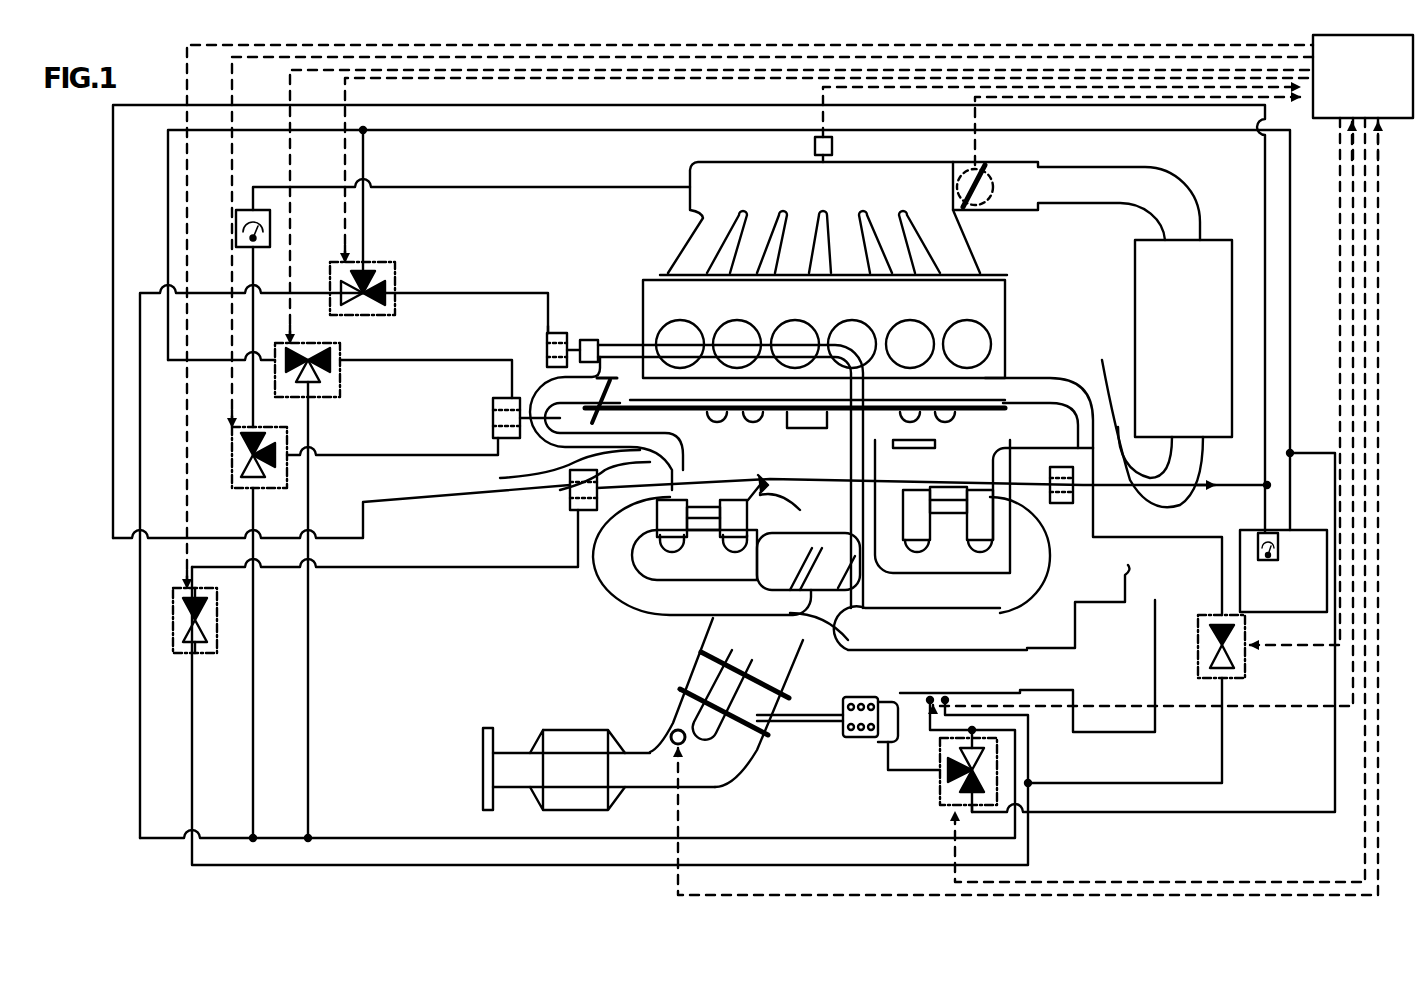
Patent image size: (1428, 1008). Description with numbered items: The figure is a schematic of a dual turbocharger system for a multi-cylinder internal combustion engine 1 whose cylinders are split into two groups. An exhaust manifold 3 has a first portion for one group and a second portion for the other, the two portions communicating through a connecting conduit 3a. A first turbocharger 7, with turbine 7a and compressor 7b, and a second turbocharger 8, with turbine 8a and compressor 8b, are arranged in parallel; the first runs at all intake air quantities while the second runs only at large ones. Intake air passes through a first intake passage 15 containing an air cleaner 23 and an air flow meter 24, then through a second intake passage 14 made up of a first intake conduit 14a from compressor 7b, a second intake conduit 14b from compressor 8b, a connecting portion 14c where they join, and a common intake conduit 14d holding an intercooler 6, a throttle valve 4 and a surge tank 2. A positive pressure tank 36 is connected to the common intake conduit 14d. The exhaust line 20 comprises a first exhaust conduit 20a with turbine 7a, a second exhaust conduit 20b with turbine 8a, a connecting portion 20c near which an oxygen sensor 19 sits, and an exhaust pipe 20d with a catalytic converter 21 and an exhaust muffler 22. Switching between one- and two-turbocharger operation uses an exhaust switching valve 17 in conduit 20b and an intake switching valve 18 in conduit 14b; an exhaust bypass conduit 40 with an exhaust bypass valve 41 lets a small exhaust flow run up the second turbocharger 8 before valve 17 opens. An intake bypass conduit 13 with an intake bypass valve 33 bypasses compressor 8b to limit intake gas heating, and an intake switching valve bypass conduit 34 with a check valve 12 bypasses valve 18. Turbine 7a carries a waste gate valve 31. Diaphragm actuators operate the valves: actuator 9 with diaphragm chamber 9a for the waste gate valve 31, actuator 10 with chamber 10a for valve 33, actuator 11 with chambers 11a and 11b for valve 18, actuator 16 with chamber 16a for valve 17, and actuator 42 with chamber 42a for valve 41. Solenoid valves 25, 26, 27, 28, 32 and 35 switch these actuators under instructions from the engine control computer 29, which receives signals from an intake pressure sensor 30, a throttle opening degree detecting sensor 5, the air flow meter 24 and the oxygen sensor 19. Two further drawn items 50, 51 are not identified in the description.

The internal combustion engine 1 is at (1005, 305).
The surge tank 2 is at (768, 160).
The exhaust manifold 3 is at (985, 418).
The connecting conduit 3a is at (832, 402).
The throttle valve 4 is at (975, 207).
The throttle opening degree detecting sensor 5 is at (990, 170).
The intercooler 6 is at (1135, 290).
The first turbocharger 7 is at (942, 510).
The turbine 7a is at (910, 548).
The compressor 7b is at (1000, 553).
The second turbocharger 8 is at (694, 540).
The turbine 8a is at (722, 548).
The compressor 8b is at (618, 558).
The actuator 9 is at (1050, 478).
The diaphragm chamber 9a is at (1085, 495).
The actuator 10 is at (547, 345).
The diaphragm chamber 10a is at (548, 330).
The actuator 11 is at (493, 418).
The diaphragm chamber 11a is at (513, 438).
The diaphragm chamber 11b is at (500, 398).
The check valve 12 is at (606, 423).
The intake bypass conduit 13 is at (765, 348).
The second intake passage 14 is at (1187, 463).
The first intake conduit 14a is at (1050, 432).
The second intake conduit 14b is at (512, 476).
The connecting portion 14c is at (1103, 380).
The common intake conduit 14d is at (1160, 180).
The first intake passage 15 is at (898, 668).
The actuator 16 is at (860, 740).
The diaphragm chamber 16a is at (888, 760).
The exhaust switching valve 17 is at (760, 742).
The intake switching valve 18 is at (612, 406).
The oxygen sensor 19 is at (670, 733).
The exhaust line 20 is at (765, 785).
The first exhaust conduit 20a is at (700, 640).
The second exhaust conduit 20b is at (803, 710).
The connecting portion 20c is at (712, 762).
The exhaust pipe 20d is at (510, 760).
The catalytic converter 21 is at (575, 795).
The exhaust muffler 22 is at (485, 735).
The air cleaner 23 is at (1160, 675).
The air flow meter 24 is at (1000, 645).
The three-way solenoid valve 25 is at (330, 340).
The solenoid valve 26 is at (248, 490).
The three-way solenoid valve 27 is at (386, 262).
The three-way solenoid valve 28 is at (940, 800).
The engine control computer 29 is at (1325, 115).
The intake pressure sensor 30 is at (833, 146).
The waste gate valve 31 is at (914, 445).
The two-way solenoid valve 32 is at (220, 655).
The intake bypass valve 33 is at (592, 340).
The intake switching valve bypass conduit 34 is at (610, 345).
The solenoid valve 35 is at (1245, 672).
The positive pressure tank 36 is at (1262, 612).
The exhaust bypass conduit 40 is at (787, 511).
The exhaust bypass valve 41 is at (789, 472).
The actuator 42 is at (570, 505).
The diaphragm chamber 42a is at (565, 490).
The flange 50 is at (700, 665).
The flange 51 is at (685, 700).